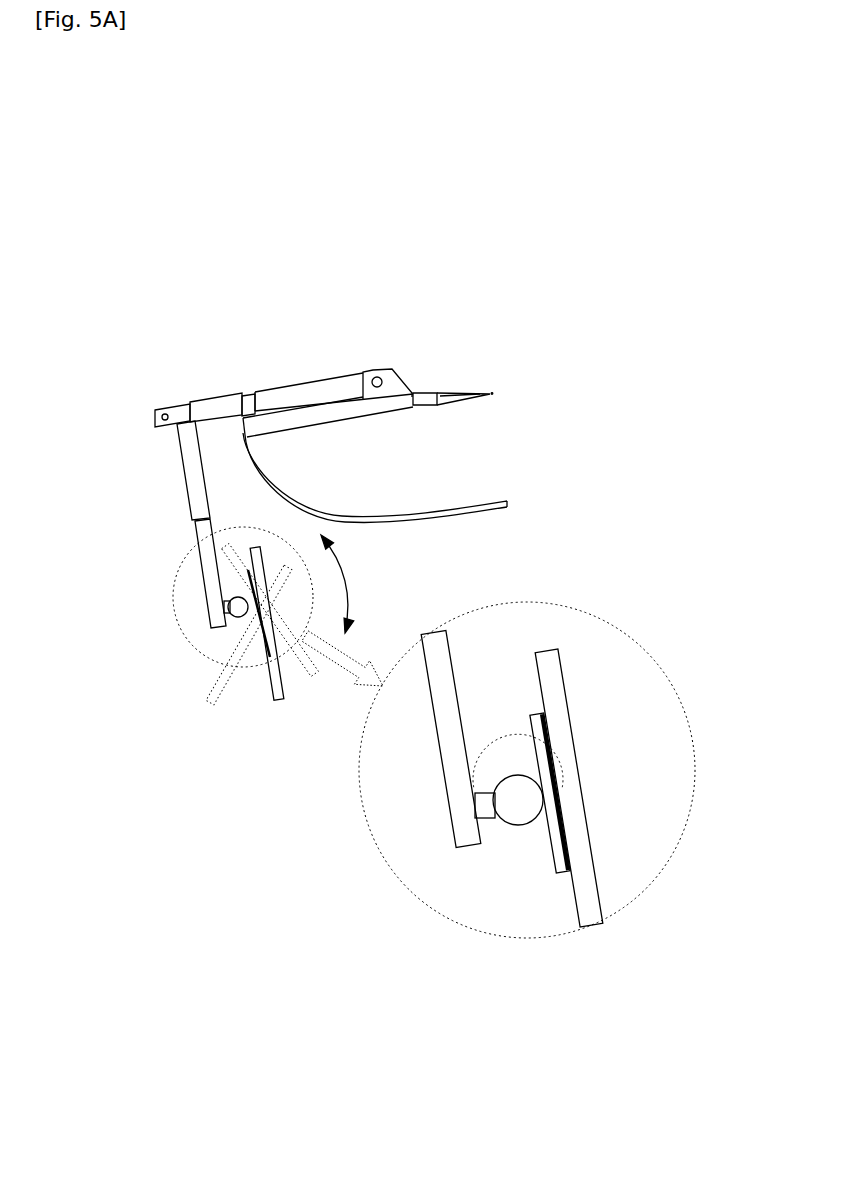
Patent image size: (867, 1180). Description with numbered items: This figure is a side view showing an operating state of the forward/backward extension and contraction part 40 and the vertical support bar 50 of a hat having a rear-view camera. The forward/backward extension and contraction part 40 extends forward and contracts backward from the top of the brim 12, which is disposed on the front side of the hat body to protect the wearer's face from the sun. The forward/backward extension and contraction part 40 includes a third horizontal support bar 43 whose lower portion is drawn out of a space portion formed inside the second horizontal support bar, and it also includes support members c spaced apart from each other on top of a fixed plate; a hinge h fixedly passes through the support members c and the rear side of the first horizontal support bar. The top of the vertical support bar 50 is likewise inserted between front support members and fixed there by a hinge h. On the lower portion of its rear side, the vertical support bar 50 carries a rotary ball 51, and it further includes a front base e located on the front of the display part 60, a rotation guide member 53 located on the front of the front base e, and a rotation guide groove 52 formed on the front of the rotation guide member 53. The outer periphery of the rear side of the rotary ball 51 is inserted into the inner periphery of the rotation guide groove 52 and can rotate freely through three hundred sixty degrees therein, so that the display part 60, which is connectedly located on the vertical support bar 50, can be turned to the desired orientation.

The forward/backward extension and contraction part 40 is at (206, 381).
The third horizontal support bar 43 is at (300, 391).
The hinge h is at (393, 371).
The support members c is at (406, 395).
The brim 12 is at (473, 493).
The vertical support bar 50 is at (463, 832).
The rotary ball 51 is at (474, 795).
The rotation guide groove 52 is at (542, 743).
The rotation guide member 53 is at (522, 832).
The front base e is at (570, 872).
The display part 60 is at (585, 850).